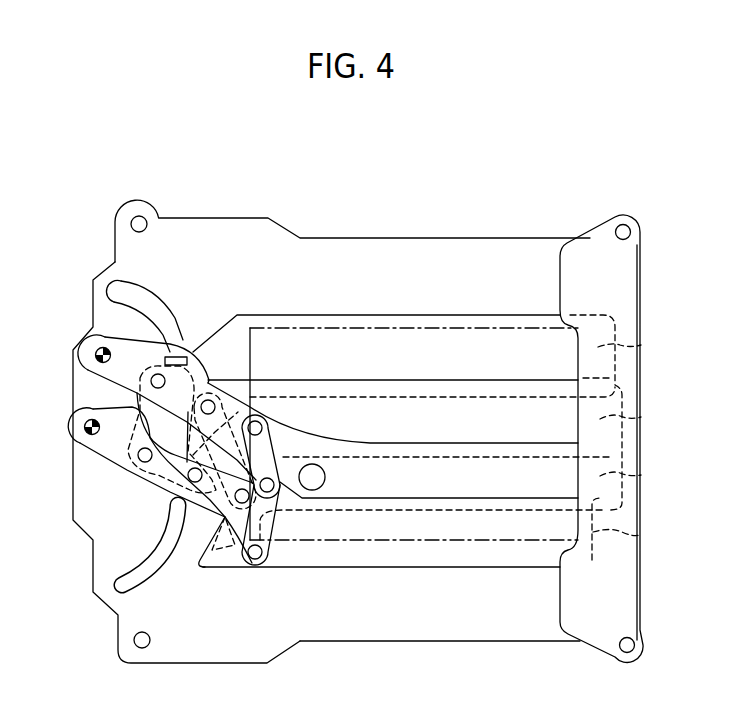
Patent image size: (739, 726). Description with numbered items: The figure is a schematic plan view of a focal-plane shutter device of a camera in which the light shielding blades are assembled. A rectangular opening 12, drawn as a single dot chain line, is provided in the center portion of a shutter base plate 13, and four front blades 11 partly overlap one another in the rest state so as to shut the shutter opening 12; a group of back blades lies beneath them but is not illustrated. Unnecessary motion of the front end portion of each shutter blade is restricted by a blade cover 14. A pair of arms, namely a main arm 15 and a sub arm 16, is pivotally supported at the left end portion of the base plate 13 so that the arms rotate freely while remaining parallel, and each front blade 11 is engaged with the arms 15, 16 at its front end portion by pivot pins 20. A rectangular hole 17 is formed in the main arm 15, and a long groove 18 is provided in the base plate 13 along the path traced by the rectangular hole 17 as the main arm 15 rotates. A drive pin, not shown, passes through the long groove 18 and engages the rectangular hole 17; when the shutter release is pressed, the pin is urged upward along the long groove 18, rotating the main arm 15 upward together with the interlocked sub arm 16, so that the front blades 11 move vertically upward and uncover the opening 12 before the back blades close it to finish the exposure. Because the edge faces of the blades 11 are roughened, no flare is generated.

The front blades 11 is at (643, 352).
The rectangular opening 12 is at (402, 355).
The shutter base plate 13 is at (477, 607).
The blade cover 14 is at (607, 265).
The main arm 15 is at (122, 380).
The sub arm 16 is at (113, 437).
The rectangular hole 17 is at (172, 357).
The long groove 18 is at (130, 293).
The pivot pin 20 is at (253, 563).